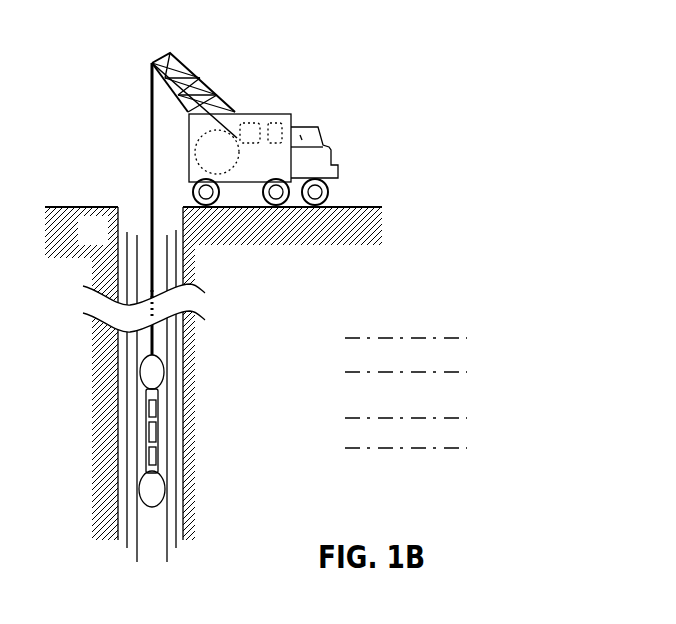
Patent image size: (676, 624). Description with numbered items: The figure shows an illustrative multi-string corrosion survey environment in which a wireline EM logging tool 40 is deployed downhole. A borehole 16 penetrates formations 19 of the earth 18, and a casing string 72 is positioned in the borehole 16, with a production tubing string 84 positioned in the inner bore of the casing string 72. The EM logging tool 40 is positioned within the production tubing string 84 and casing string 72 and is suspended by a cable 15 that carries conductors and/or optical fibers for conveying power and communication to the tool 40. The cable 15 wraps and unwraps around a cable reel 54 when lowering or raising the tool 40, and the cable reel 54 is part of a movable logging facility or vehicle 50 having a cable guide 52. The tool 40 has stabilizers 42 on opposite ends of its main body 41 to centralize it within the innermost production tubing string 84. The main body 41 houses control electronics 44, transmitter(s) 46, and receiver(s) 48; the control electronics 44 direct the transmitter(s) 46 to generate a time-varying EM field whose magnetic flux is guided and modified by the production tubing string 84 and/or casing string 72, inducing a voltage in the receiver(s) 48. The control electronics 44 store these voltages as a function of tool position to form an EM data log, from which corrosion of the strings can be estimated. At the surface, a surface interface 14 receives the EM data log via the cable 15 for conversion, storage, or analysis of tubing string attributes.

The surface interface 14 is at (245, 127).
The cable 15 is at (152, 160).
The borehole 16 is at (127, 204).
The earth 18 is at (105, 243).
The formations 19 is at (480, 325).
The EM logging tool 40 is at (180, 426).
The main body 41 is at (147, 433).
The stabilizers 42 is at (143, 373).
The control electronics 44 is at (155, 408).
The transmitter(s) 46 is at (155, 438).
The receiver(s) 48 is at (191, 464).
The movable logging facility or vehicle 50 is at (331, 160).
The cable guide 52 is at (183, 62).
The cable reel 54 is at (202, 158).
The casing string 72 is at (125, 545).
The production tubing string 84 is at (135, 555).